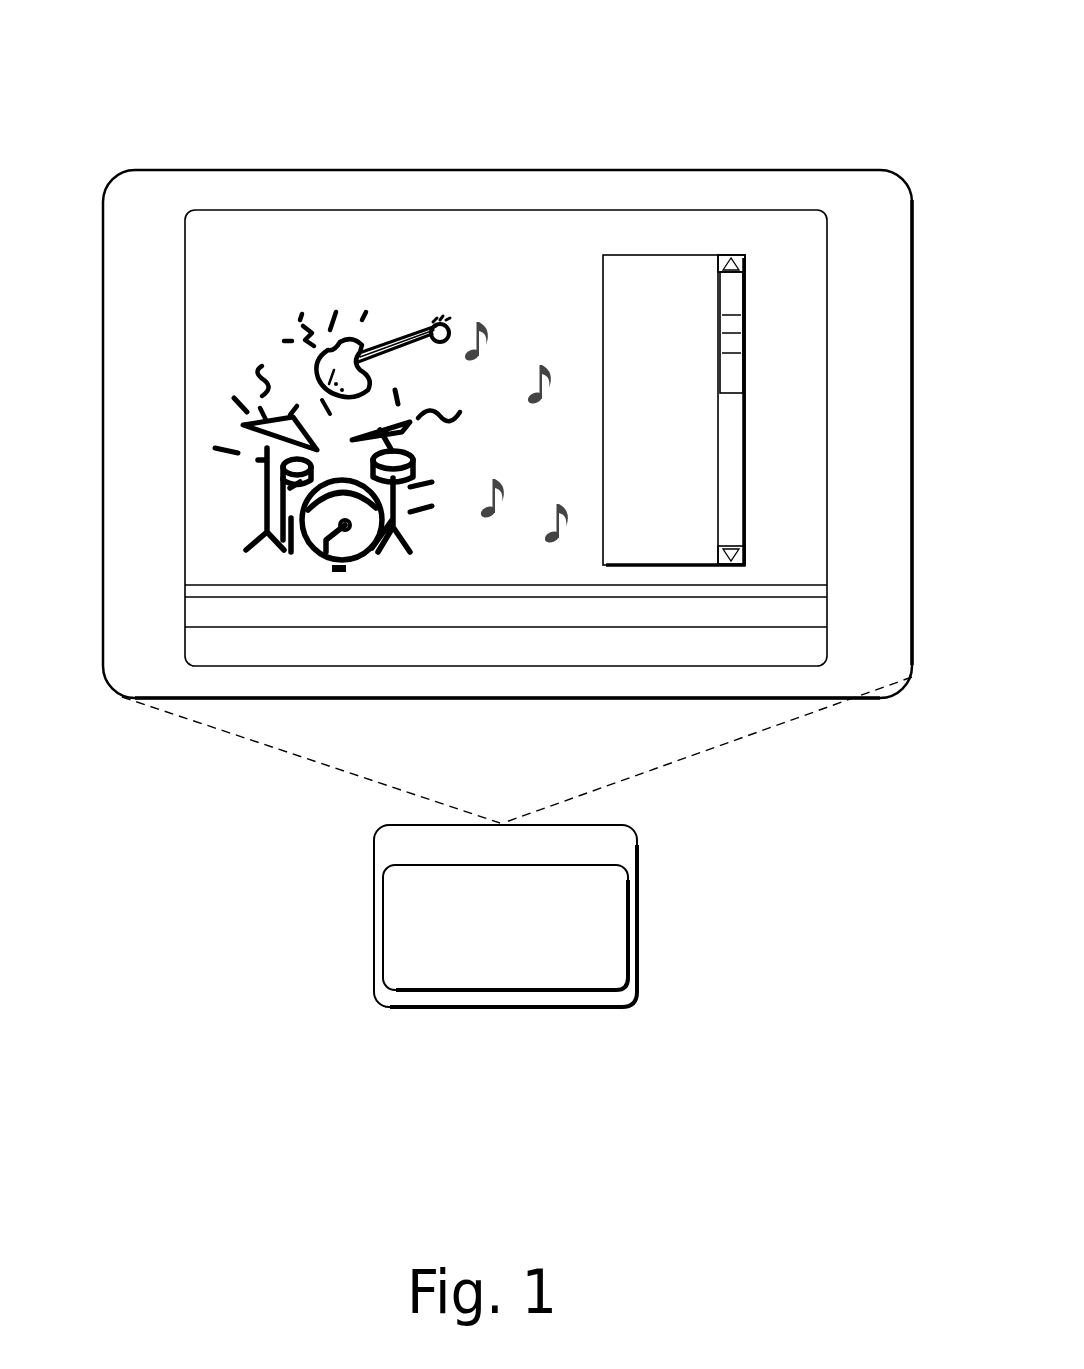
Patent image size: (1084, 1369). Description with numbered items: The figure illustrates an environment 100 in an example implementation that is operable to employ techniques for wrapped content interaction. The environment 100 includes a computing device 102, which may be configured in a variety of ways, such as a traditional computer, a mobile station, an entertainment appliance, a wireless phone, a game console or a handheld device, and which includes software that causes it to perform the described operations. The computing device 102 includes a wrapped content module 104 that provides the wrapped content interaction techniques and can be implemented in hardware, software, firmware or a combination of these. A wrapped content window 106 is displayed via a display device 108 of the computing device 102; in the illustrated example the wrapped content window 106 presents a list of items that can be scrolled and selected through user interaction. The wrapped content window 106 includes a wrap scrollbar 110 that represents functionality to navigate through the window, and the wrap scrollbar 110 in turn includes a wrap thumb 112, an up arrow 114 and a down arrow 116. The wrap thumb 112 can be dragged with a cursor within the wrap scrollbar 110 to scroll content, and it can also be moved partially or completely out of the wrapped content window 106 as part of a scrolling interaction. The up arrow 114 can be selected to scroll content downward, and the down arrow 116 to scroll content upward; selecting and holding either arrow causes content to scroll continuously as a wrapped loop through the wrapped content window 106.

The environment 100 is at (190, 70).
The computing device 102 is at (505, 916).
The wrapped content module 104 is at (505, 927).
The wrapped content window 106 is at (603, 255).
The display device 108 is at (510, 170).
The wrap scrollbar 110 is at (755, 563).
The wrap thumb 112 is at (730, 300).
The up arrow 114 is at (735, 258).
The down arrow 116 is at (754, 563).